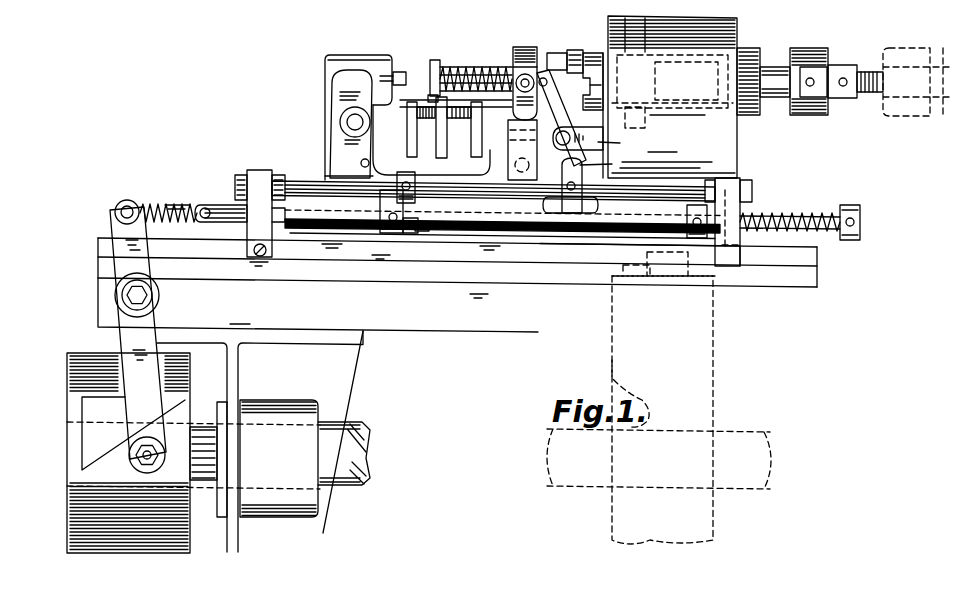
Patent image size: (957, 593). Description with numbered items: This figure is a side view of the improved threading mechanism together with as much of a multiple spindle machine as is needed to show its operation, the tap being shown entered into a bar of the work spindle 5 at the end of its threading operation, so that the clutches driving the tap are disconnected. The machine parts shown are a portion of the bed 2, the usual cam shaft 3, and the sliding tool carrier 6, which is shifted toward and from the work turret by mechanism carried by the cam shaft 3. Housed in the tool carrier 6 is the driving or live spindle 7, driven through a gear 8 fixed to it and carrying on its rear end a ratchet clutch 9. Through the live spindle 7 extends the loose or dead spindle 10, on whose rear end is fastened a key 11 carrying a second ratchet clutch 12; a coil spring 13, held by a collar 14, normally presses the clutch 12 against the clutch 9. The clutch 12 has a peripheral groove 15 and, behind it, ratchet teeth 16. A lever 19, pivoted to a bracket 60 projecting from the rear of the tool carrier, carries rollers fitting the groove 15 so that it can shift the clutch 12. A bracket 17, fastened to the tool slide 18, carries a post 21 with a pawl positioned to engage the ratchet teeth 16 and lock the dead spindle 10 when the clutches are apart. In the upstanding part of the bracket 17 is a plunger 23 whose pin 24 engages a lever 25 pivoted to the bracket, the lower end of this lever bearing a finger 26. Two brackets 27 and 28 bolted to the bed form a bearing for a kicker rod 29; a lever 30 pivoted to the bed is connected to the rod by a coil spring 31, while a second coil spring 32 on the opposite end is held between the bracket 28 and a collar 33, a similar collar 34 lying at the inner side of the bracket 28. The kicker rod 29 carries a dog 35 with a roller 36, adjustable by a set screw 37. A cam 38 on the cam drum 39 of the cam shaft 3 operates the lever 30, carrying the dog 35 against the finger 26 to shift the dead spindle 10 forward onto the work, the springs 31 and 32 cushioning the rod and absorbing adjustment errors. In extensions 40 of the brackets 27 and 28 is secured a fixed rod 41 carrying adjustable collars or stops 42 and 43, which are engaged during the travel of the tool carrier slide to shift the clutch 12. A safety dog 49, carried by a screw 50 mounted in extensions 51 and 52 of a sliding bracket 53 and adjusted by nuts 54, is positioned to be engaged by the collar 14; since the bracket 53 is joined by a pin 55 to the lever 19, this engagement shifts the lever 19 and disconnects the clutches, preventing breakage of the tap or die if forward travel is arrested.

The bed 2 is at (457, 378).
The cam shaft 3 is at (360, 425).
The work spindle 5 is at (907, 110).
The sliding tool carrier 6 is at (670, 97).
The driving or live spindle 7 is at (745, 49).
The gear 8 is at (630, 34).
The ratchet clutch 9 is at (598, 54).
The loose or dead spindle 10 is at (822, 50).
The key 11 is at (461, 66).
The ratchet clutch member 12 is at (572, 56).
The coil spring 13 is at (479, 68).
The collar 14 is at (440, 61).
The groove 15 is at (550, 54).
The ratchet teeth 16 is at (525, 47).
The bracket 17 is at (340, 58).
The tool slide 18 is at (568, 236).
The lever 19 is at (570, 126).
The post 21 is at (523, 123).
The plunger 23 is at (402, 73).
The pin 24 is at (335, 86).
The lever 25 is at (341, 102).
The projection or finger 26 is at (368, 158).
The bracket 27 is at (258, 174).
The bracket 28 is at (741, 178).
The kicker rod 29 is at (517, 222).
The lever 30 is at (128, 343).
The coil spring 31 is at (197, 195).
The coil spring 32 is at (793, 213).
The collar 33 is at (855, 206).
The collar 34 is at (700, 241).
The dog 35 is at (390, 229).
The roller 36 is at (386, 214).
The set screw 37 is at (410, 234).
The cam 38 is at (82, 415).
The cam drum 39 is at (75, 487).
The extensions 40 is at (758, 1).
The fixed rod 41 is at (308, 226).
The collar or stop 42 is at (580, 216).
The collar or stop 43 is at (424, 229).
The safety dog 49 is at (443, 120).
The screw 50 is at (428, 120).
The extension 51 is at (408, 127).
The extension 52 is at (478, 126).
The sliding bracket 53 is at (442, 138).
The nuts 54 is at (433, 99).
The pin 55 is at (609, 163).
The bracket 60 is at (621, 145).